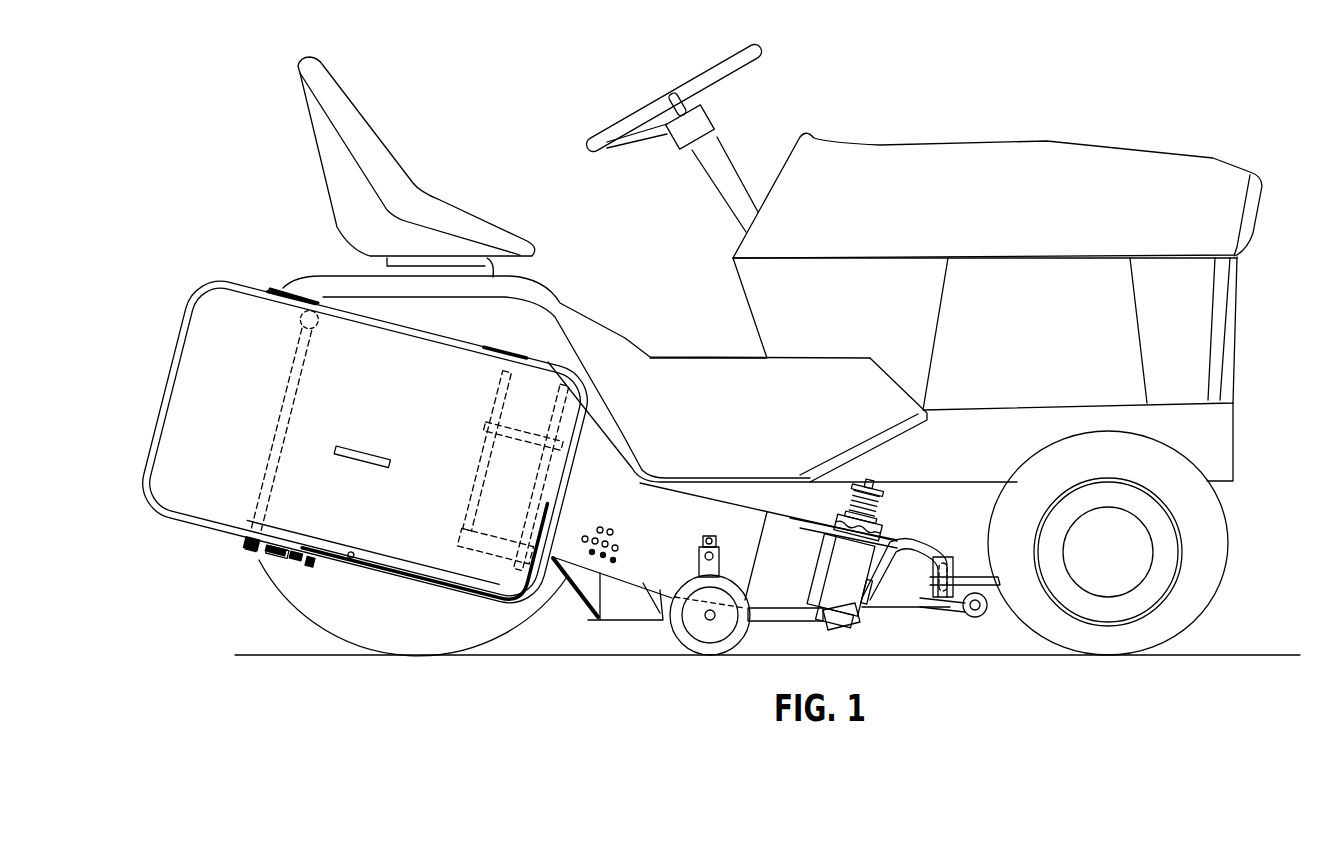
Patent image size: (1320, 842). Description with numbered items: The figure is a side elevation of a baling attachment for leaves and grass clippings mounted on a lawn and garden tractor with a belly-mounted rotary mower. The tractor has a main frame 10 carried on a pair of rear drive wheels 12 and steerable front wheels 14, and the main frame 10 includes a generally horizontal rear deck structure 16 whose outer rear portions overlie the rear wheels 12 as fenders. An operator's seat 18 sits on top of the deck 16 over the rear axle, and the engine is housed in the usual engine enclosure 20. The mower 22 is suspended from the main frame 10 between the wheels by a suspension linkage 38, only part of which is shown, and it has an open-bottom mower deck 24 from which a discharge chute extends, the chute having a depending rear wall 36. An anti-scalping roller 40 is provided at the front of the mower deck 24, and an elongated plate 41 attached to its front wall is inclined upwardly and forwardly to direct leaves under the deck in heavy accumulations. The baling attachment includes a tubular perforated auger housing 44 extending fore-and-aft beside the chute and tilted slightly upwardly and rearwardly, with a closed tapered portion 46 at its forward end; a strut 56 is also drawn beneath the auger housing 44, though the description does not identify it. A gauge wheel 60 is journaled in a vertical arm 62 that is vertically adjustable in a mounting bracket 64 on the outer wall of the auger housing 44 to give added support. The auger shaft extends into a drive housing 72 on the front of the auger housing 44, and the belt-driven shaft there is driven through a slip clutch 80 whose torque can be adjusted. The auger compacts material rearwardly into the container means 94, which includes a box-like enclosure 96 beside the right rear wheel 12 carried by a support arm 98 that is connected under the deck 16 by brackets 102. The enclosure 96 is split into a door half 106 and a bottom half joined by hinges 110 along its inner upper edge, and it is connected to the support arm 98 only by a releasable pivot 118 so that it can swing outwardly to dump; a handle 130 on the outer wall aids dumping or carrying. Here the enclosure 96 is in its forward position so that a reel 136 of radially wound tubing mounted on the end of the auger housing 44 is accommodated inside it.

The main frame 10 is at (1241, 461).
The rear drive wheels 12 is at (308, 612).
The steerable front wheels 14 is at (1224, 565).
The rear deck structure 16 is at (565, 299).
The operator's seat 18 is at (340, 110).
The engine enclosure 20 is at (1052, 155).
The mower 22 is at (931, 541).
The mower deck 24 is at (910, 598).
The rear wall 36 is at (630, 615).
The suspension linkage 38 is at (968, 570).
The anti-scalping roller 40 is at (976, 617).
The plate 41 is at (928, 600).
The auger housing 44 is at (662, 488).
The tapered portion 46 is at (785, 528).
The strut 56 is at (578, 588).
The gauge wheel 60 is at (703, 648).
The vertical arm 62 is at (714, 537).
The mounting bracket 64 is at (698, 562).
The drive housing 72 is at (851, 620).
The slip clutch 80 is at (886, 524).
The container means 94 is at (240, 280).
The enclosure 96 is at (190, 500).
The support arm 98 is at (251, 553).
The brackets 102 is at (303, 320).
The door half 106 is at (405, 372).
The hinges 110 is at (497, 345).
The pivot 118 is at (286, 562).
The handle 130 is at (362, 450).
The reel 136 is at (470, 588).